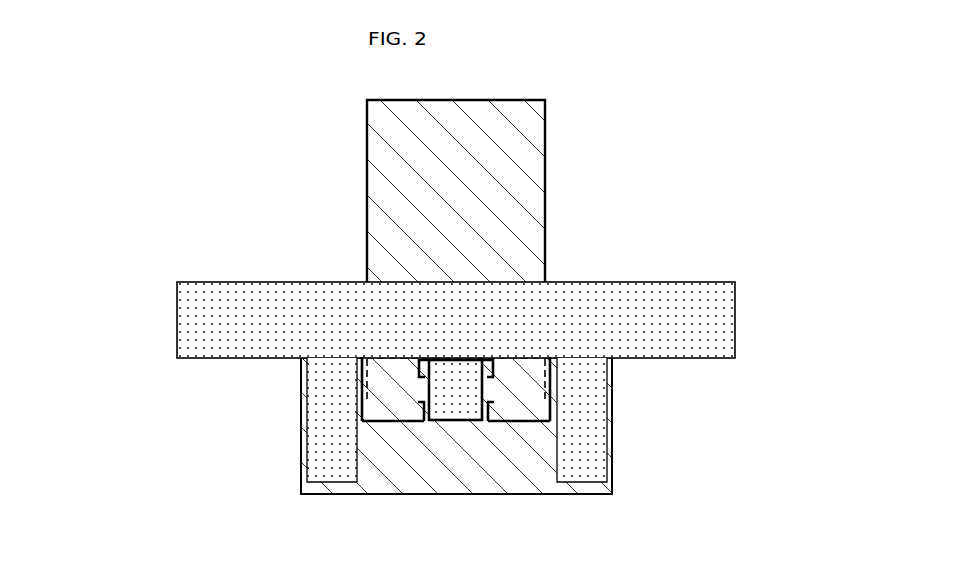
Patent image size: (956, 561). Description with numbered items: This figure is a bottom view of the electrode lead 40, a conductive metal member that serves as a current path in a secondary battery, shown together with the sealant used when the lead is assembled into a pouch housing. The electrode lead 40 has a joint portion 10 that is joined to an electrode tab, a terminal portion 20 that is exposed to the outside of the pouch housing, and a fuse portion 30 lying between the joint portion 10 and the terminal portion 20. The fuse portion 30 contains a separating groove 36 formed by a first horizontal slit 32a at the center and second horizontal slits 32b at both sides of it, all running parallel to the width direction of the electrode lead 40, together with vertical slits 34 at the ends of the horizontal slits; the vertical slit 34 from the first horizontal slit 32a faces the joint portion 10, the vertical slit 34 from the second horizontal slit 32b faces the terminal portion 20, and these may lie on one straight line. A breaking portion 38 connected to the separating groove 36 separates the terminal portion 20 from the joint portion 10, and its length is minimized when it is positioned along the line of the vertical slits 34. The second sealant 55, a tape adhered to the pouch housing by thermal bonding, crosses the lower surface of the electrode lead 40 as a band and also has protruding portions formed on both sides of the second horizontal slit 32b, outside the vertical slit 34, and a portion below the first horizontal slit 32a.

The joint portion 10 is at (510, 487).
The terminal portion 20 is at (376, 167).
The fuse portion 30 is at (206, 383).
The first horizontal slit 32a is at (455, 361).
The second horizontal slit 32b is at (382, 419).
The vertical slit 34 is at (362, 402).
The separating groove 36 is at (246, 403).
The breaking portion 38 is at (362, 377).
The electrode lead 40 is at (192, 467).
The second sealant 55 is at (674, 287).